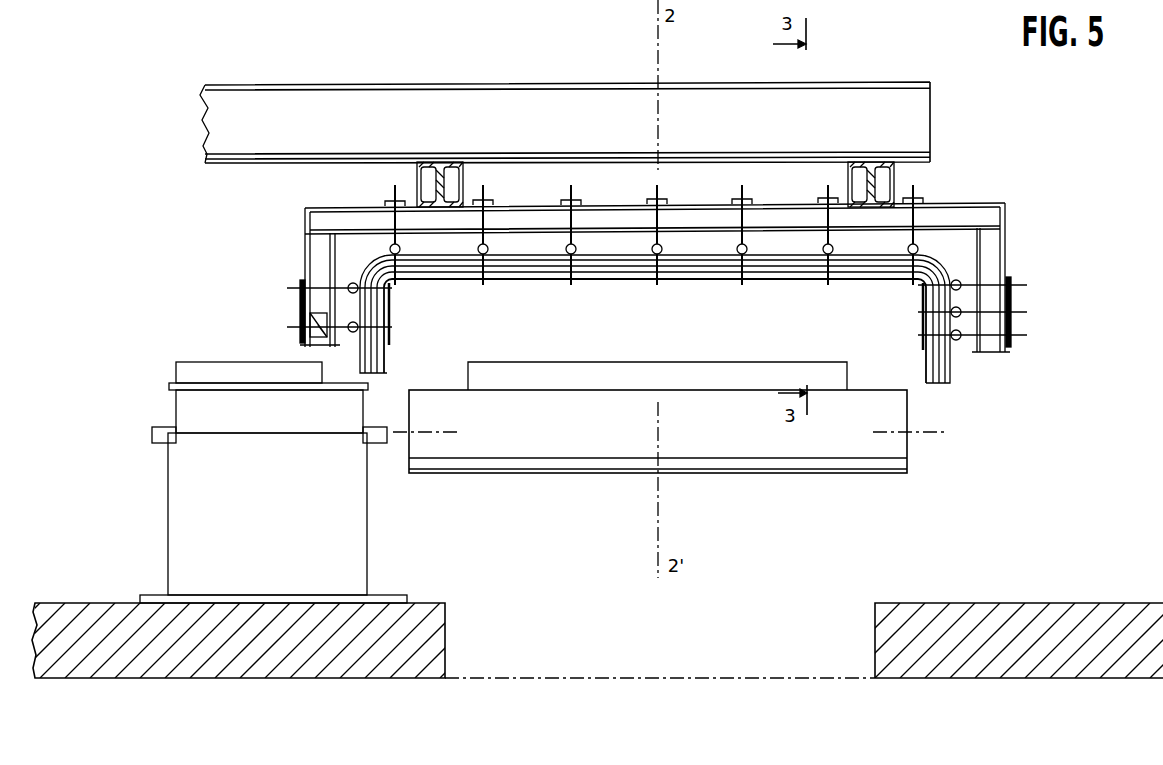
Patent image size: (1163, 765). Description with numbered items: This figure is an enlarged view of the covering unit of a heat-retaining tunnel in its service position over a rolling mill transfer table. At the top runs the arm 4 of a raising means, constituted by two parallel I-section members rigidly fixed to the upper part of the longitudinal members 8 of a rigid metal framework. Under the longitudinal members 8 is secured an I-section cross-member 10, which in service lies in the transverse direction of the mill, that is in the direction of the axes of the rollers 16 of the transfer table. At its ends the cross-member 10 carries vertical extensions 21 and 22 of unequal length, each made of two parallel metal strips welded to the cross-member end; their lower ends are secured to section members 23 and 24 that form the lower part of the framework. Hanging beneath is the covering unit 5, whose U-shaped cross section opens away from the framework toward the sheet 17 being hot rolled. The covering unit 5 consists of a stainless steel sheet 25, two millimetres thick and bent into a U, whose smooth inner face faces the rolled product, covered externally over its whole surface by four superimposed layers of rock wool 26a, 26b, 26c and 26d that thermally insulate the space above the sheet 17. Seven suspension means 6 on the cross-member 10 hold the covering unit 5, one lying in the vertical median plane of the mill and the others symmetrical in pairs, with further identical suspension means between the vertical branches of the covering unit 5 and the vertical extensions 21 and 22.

The arm 4 is at (274, 98).
The covering unit 5 is at (935, 370).
The suspension means 6 is at (735, 235).
The longitudinal member 8 is at (437, 190).
The cross-member 10 is at (322, 215).
The rollers 16 is at (472, 466).
The sheet being hot rolled 17 is at (673, 372).
The vertical extension 21 is at (312, 250).
The vertical extension 22 is at (995, 250).
The section member 23 is at (305, 340).
The section member 24 is at (980, 352).
The stainless steel sheet 25 is at (618, 279).
The layer of rock wool 26a is at (385, 357).
The layer of rock wool 26b is at (388, 372).
The layer of rock wool 26c is at (366, 380).
The layer of rock wool 26d is at (360, 372).